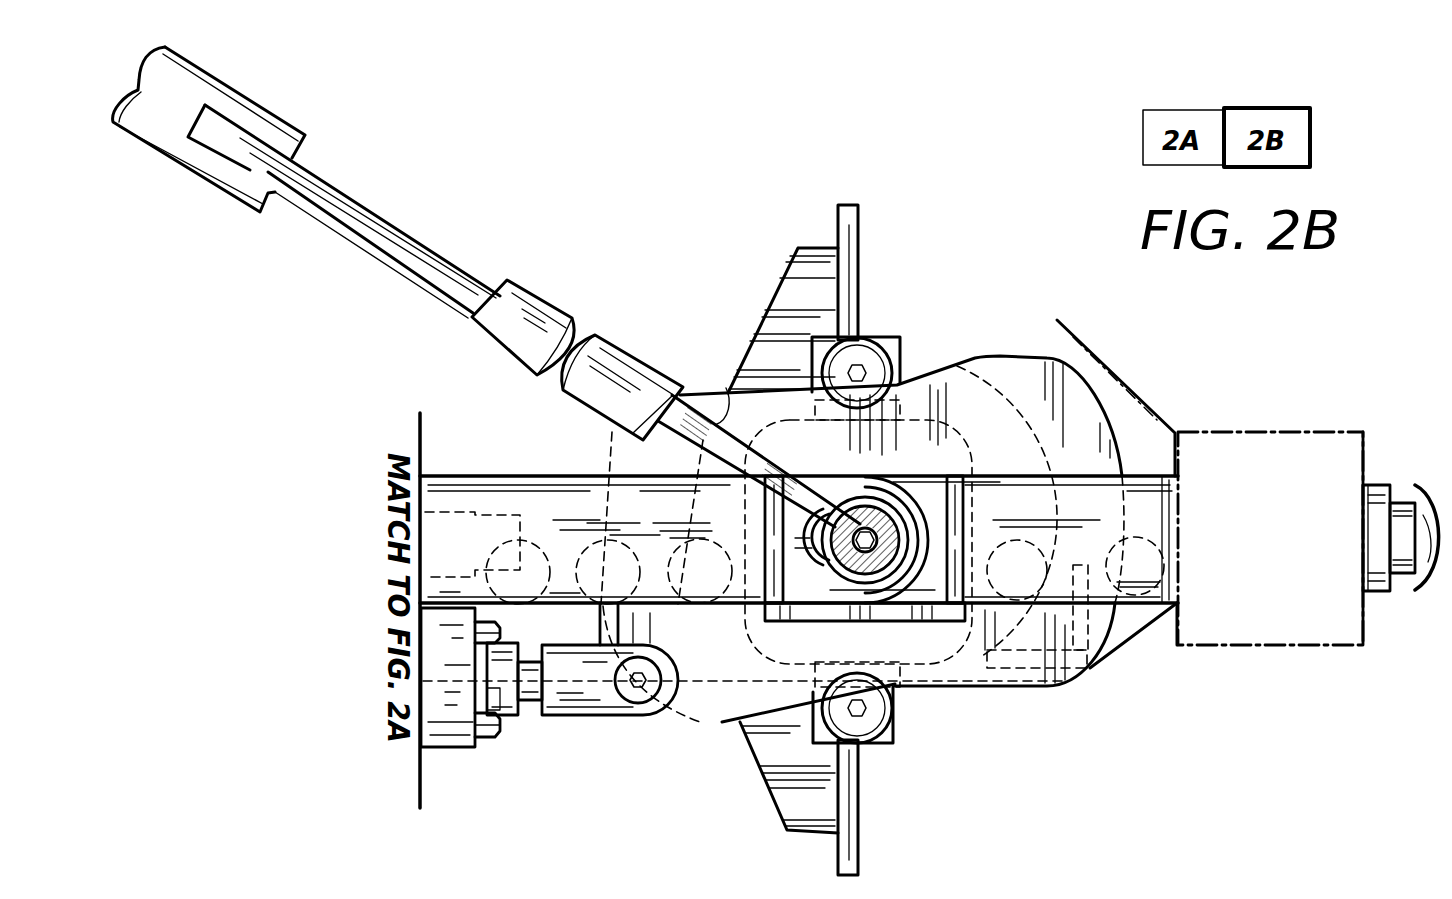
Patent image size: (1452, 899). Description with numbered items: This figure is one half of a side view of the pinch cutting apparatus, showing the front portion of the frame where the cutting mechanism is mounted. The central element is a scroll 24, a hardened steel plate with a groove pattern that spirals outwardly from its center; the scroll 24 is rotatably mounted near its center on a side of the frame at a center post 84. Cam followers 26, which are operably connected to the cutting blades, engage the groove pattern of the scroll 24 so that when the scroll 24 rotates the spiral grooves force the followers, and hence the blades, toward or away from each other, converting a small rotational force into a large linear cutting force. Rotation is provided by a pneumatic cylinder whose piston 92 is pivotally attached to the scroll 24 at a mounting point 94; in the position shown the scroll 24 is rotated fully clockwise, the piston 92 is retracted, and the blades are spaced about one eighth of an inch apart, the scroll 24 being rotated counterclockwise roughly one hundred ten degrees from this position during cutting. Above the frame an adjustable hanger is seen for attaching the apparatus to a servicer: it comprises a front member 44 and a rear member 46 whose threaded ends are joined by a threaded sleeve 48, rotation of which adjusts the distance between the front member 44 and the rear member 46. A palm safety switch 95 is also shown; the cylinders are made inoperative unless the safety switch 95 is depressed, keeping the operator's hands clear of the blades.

The scroll 24 is at (1025, 378).
The cam follower 26 is at (864, 350).
The front member 44 is at (714, 404).
The rear member 46 is at (440, 260).
The threaded sleeve 48 is at (546, 316).
The center post 84 is at (884, 562).
The piston 92 is at (528, 690).
The mounting point 94 is at (640, 698).
The palm safety switch 95 is at (1430, 565).